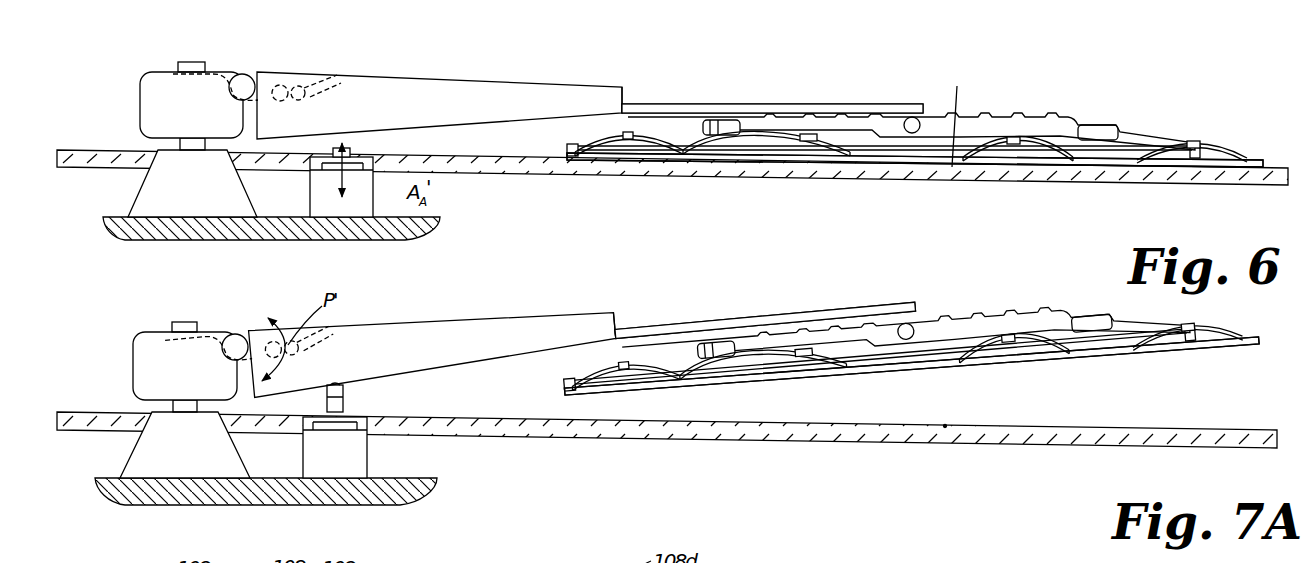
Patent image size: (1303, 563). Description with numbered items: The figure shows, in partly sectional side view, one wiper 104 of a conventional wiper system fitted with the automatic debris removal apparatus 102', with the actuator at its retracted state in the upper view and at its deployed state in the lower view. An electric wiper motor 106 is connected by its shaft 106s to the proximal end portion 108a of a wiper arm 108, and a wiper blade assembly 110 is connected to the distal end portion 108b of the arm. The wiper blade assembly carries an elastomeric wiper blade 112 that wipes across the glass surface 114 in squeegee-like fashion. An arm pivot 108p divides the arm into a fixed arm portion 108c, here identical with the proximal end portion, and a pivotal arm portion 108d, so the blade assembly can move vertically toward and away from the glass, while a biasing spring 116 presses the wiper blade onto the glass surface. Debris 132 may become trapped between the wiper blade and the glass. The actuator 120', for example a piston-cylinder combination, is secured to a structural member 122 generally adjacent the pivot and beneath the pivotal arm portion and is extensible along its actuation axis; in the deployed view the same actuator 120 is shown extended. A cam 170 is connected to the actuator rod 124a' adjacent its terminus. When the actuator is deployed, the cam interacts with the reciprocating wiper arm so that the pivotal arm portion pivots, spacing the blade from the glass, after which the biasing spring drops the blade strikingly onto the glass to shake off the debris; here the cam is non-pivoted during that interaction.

In FIG. 6, the automatic debris removal apparatus 102' is at (275, 237).
In FIG. 7A, the automatic debris removal apparatus 102' is at (416, 454).
In FIG. 6, the wiper 104 is at (635, 87).
In FIG. 7A, the wiper 104 is at (626, 319).
In FIG. 6, the electric wiper motor 106 is at (158, 186).
In FIG. 7A, the electric wiper motor 106 is at (138, 455).
In FIG. 6, the shaft 106s is at (177, 145).
In FIG. 7A, the shaft 106s is at (173, 405).
In FIG. 6, the wiper arm 108 is at (405, 70).
In FIG. 7A, the wiper arm 108 is at (392, 319).
In FIG. 6, the proximal end portion 108a is at (228, 67).
In FIG. 7A, the proximal end portion 108a is at (220, 331).
In FIG. 6, the distal end portion 108b is at (793, 103).
In FIG. 7A, the distal end portion 108b is at (788, 315).
In FIG. 6, the fixed arm portion 108c is at (155, 63).
In FIG. 7A, the fixed arm portion 108c is at (148, 323).
In FIG. 6, the pivotal arm portion 108d is at (620, 79).
In FIG. 7A, the pivotal arm portion 108d is at (613, 306).
In FIG. 6, the arm pivot 108p is at (246, 75).
In FIG. 7A, the arm pivot 108p is at (240, 336).
In FIG. 6, the wiper blade assembly 110 is at (1022, 99).
In FIG. 7A, the wiper blade assembly 110 is at (1022, 305).
In FIG. 6, the elastomeric wiper blade 112 is at (877, 163).
In FIG. 7A, the elastomeric wiper blade 112 is at (997, 360).
In FIG. 6, the glass surface 114 is at (963, 115).
In FIG. 7A, the glass surface 114 is at (945, 425).
In FIG. 6, the biasing spring 116 is at (318, 100).
In FIG. 7A, the biasing spring 116 is at (300, 357).
In FIG. 7A, the stopper block 120 is at (335, 479).
In FIG. 6, the actuator 120' is at (341, 219).
In FIG. 6, the structural member 122 is at (420, 232).
In FIG. 7A, the structural member 122 is at (417, 492).
In FIG. 7A, the actuator rod 124a' is at (403, 402).
In FIG. 6, the debris 132 is at (703, 163).
In FIG. 7A, the debris 132 is at (693, 421).
In FIG. 6, the cam 170 is at (352, 152).
In FIG. 7A, the cam 170 is at (342, 383).